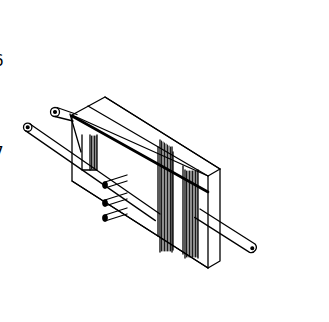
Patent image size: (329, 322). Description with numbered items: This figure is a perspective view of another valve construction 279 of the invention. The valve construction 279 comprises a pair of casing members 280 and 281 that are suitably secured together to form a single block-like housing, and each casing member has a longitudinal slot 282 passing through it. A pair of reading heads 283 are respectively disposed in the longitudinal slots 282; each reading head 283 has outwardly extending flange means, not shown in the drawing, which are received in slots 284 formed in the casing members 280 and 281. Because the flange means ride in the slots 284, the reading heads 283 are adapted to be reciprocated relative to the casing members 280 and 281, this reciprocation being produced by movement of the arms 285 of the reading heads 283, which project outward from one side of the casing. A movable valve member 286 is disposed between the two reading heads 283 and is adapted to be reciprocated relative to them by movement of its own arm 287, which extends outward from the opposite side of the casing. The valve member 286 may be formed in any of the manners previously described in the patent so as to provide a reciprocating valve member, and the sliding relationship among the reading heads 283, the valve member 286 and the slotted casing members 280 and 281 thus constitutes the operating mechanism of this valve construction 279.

The valve construction 279 is at (167, 95).
The casing member 280 is at (178, 153).
The casing member 281 is at (150, 131).
The longitudinal slot 282 is at (171, 182).
The reading head 283 is at (149, 228).
The slot 284 is at (169, 251).
The arm 285 is at (67, 111).
The movable valve member 286 is at (174, 208).
The arm 287 is at (233, 236).